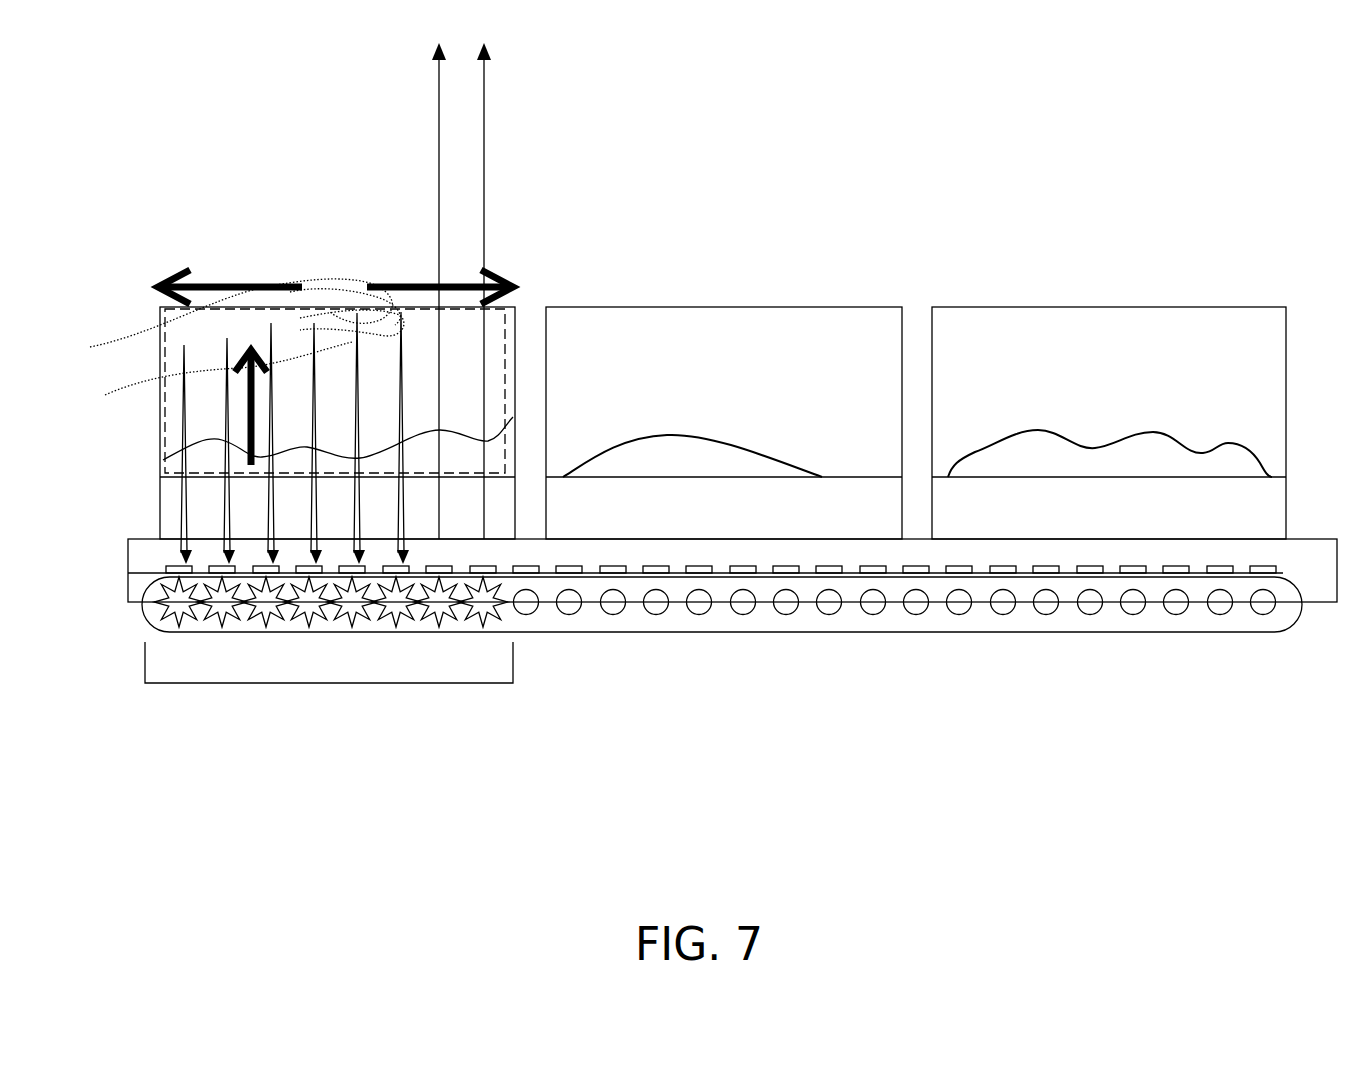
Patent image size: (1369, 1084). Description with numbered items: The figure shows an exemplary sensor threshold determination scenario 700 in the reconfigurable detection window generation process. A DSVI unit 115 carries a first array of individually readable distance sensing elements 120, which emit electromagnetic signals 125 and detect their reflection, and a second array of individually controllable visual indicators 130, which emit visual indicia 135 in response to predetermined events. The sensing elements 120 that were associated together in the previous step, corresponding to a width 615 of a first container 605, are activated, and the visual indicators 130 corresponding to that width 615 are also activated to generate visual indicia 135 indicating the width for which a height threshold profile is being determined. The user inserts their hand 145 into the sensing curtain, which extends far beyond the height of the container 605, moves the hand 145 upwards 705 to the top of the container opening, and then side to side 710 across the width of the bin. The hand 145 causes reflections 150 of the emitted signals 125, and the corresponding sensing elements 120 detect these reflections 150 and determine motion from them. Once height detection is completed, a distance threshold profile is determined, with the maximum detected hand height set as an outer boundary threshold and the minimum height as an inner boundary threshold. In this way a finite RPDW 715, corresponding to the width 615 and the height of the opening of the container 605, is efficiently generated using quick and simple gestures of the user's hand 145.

The scenario 700 is at (187, 77).
The side to side motion 710 is at (223, 283).
The upward motion 705 is at (257, 348).
The hand 145 is at (125, 363).
The first container 605 is at (513, 310).
The RPDW 715 is at (163, 447).
The electromagnetic signals 125 is at (178, 548).
The visual indicia 135 is at (163, 613).
The reflections 150 is at (408, 560).
The width 615 is at (338, 686).
The distance sensing elements 120 is at (697, 573).
The visual indicators 130 is at (702, 605).
The DSVI unit 115 is at (985, 632).